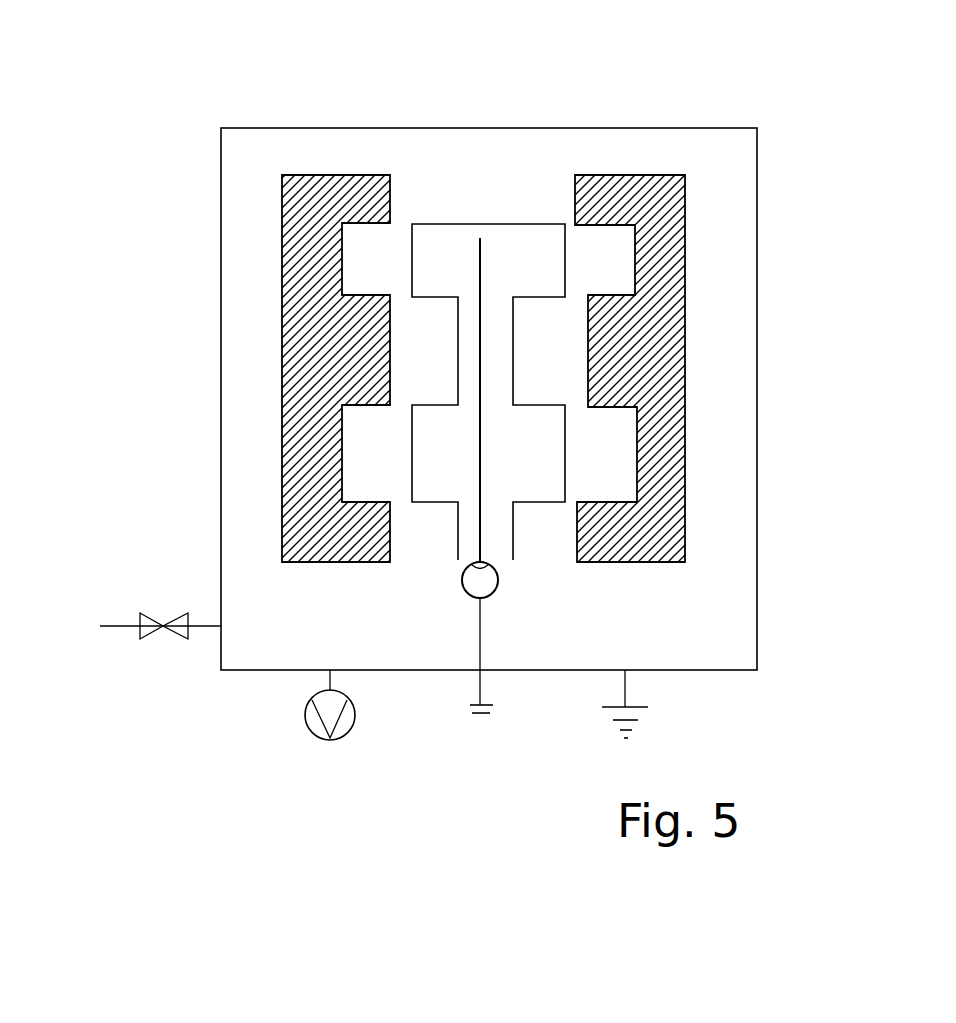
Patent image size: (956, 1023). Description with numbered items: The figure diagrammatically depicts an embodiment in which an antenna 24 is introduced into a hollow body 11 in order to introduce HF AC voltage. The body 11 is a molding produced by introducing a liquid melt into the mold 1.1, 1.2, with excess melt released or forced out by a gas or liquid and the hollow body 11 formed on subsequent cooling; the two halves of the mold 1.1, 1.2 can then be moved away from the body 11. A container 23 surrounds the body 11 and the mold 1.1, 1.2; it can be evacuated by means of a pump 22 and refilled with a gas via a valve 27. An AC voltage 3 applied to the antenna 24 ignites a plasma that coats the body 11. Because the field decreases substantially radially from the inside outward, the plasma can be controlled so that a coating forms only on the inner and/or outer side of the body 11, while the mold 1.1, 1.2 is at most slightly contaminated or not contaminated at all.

The mold 1.1 is at (303, 352).
The mold 1.2 is at (684, 178).
The hollow body 11 is at (520, 262).
The antenna 24 is at (477, 267).
The AC voltage 3 is at (477, 590).
The pump 22 is at (323, 728).
The container 23 is at (221, 530).
The valve 27 is at (140, 628).